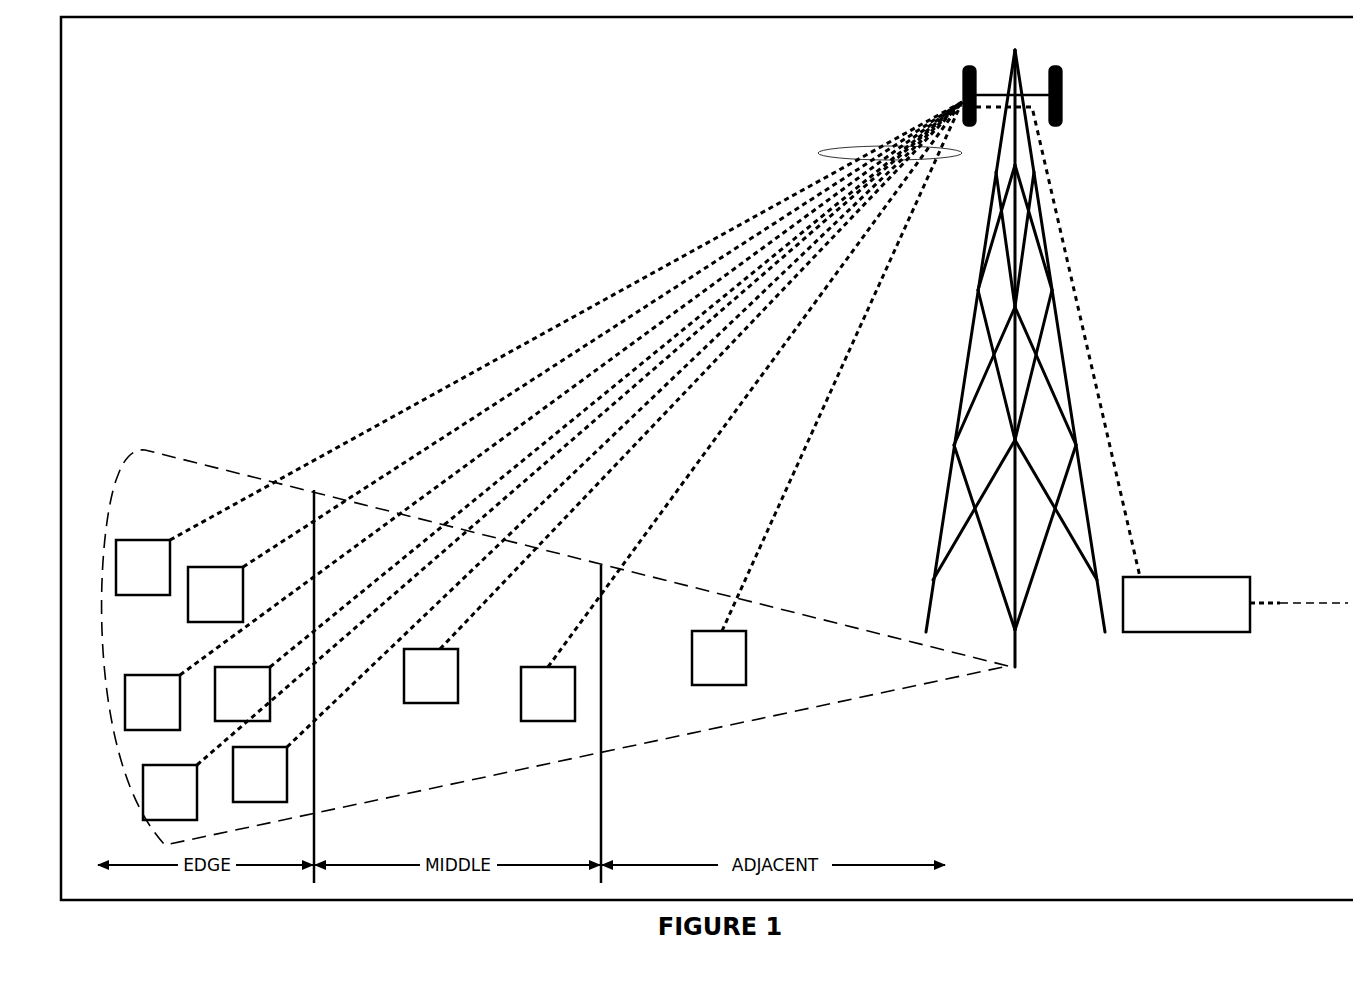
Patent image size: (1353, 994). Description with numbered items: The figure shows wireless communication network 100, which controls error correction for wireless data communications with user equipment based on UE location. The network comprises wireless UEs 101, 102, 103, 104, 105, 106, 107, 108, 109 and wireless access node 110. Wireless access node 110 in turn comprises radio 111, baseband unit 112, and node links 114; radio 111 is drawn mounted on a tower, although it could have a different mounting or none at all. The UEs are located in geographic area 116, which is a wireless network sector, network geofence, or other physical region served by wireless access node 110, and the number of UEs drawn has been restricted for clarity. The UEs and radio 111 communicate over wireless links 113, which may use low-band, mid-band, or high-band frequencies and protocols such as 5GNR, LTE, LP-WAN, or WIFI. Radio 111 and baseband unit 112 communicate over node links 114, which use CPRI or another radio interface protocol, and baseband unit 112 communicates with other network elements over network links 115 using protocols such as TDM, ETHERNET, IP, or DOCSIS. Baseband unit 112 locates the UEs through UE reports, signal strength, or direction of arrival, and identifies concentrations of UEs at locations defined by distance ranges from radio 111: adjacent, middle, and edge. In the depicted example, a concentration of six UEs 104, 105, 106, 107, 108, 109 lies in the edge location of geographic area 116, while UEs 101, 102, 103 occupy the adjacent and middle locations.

The wireless communication network 100 is at (922, 48).
The wireless User Equipment 101 is at (719, 658).
The wireless User Equipment 102 is at (548, 694).
The wireless User Equipment 103 is at (431, 676).
The wireless User Equipment 104 is at (260, 774).
The wireless User Equipment 105 is at (170, 792).
The wireless User Equipment 106 is at (242, 694).
The wireless User Equipment 107 is at (152, 702).
The wireless User Equipment 108 is at (215, 594).
The wireless User Equipment 109 is at (143, 567).
The wireless access node 110 is at (1213, 163).
The radio 111 is at (964, 88).
The baseband unit 112 is at (1186, 604).
The wireless links 113 is at (822, 152).
The node links 114 is at (1103, 402).
The network links 115 is at (1279, 603).
The geographic area 116 is at (815, 618).